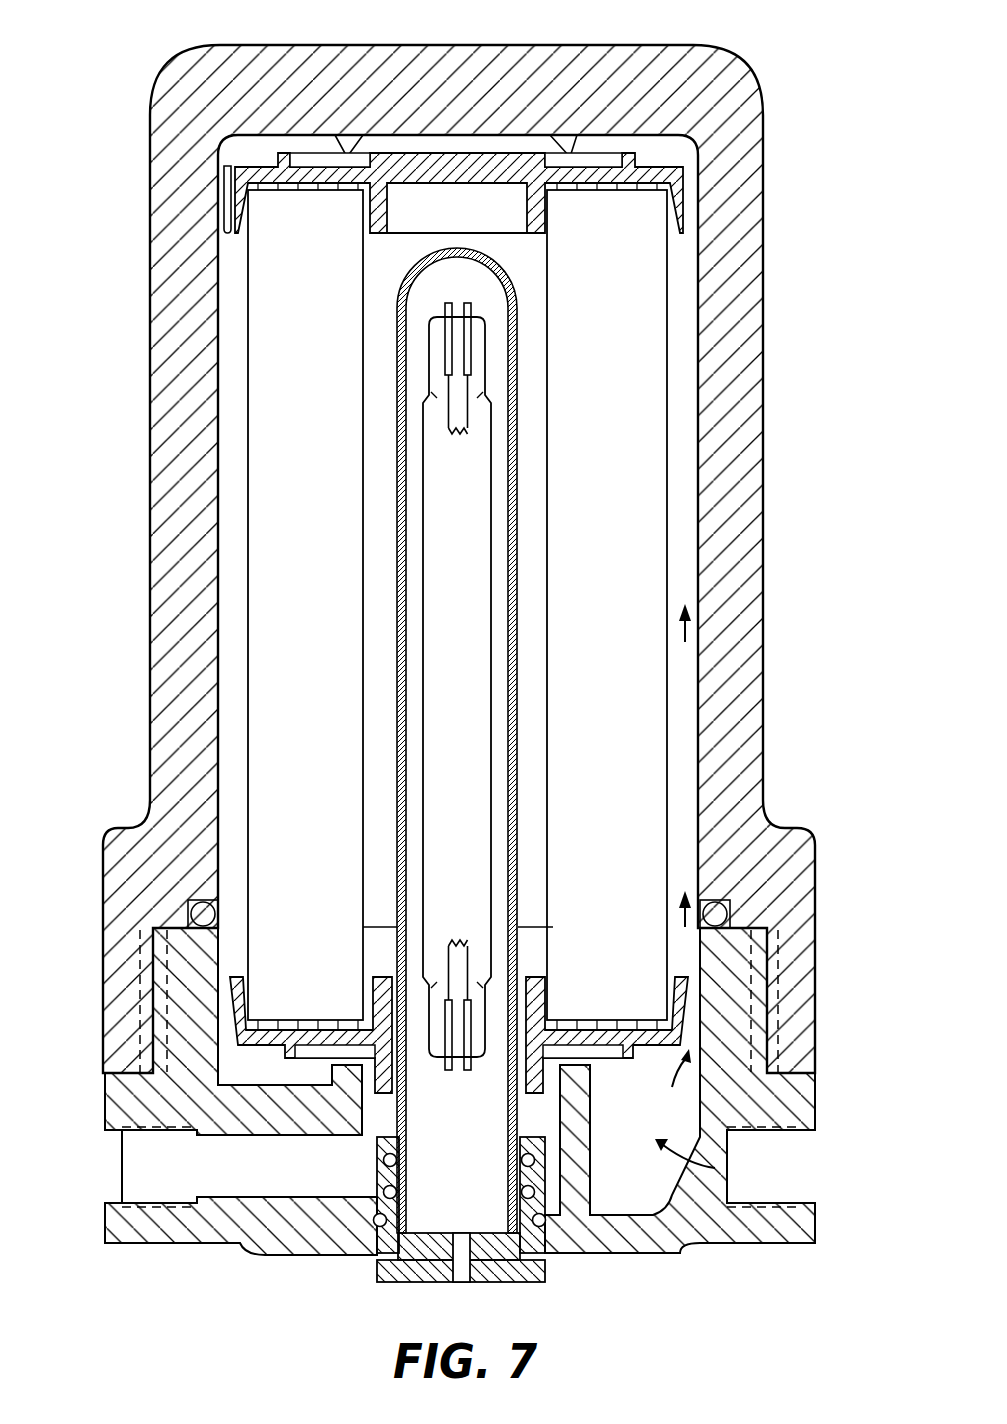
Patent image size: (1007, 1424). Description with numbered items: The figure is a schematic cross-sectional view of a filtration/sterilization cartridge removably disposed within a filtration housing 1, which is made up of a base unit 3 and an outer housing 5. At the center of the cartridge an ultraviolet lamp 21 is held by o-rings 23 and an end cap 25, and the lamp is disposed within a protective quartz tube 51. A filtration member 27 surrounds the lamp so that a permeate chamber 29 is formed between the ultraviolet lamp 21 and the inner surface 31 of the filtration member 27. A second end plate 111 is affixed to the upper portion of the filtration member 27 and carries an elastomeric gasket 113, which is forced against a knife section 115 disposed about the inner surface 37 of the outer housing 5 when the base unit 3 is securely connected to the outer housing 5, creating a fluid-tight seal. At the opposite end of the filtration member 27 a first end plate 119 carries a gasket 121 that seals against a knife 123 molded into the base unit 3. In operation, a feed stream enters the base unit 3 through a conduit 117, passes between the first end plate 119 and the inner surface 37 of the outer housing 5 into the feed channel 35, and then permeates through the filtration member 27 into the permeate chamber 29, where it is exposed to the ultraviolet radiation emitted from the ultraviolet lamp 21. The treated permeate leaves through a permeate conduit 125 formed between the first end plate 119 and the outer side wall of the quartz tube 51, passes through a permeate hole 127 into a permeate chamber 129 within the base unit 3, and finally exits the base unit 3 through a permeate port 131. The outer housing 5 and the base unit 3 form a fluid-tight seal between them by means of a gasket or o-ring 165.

The filtration housing 1 is at (104, 469).
The base unit 3 is at (461, 1133).
The outer housing 5 is at (765, 240).
The ultraviolet lamp 21 is at (492, 474).
The o-rings 23 is at (520, 1222).
The end cap 25 is at (405, 1283).
The filtration member 27 is at (265, 568).
The permeate chamber 29 is at (393, 261).
The inner surface of filtration member 31 is at (379, 525).
The feed channel 35 is at (680, 443).
The inner surface of outer housing 37 is at (684, 352).
The quartz tube 51 is at (517, 318).
The second end plate 111 is at (249, 177).
The gasket 113 is at (306, 152).
The knife section 115 is at (346, 156).
The conduit 117 is at (800, 1163).
The first end plate 119 is at (690, 1007).
The gasket 121 is at (602, 1043).
The knife 123 is at (605, 1065).
The permeate conduit 125 is at (397, 977).
The permeate hole 127 is at (385, 1112).
The permeate chamber 129 is at (368, 1113).
The permeate port 131 is at (135, 1166).
The gasket or o-ring 165 is at (218, 912).